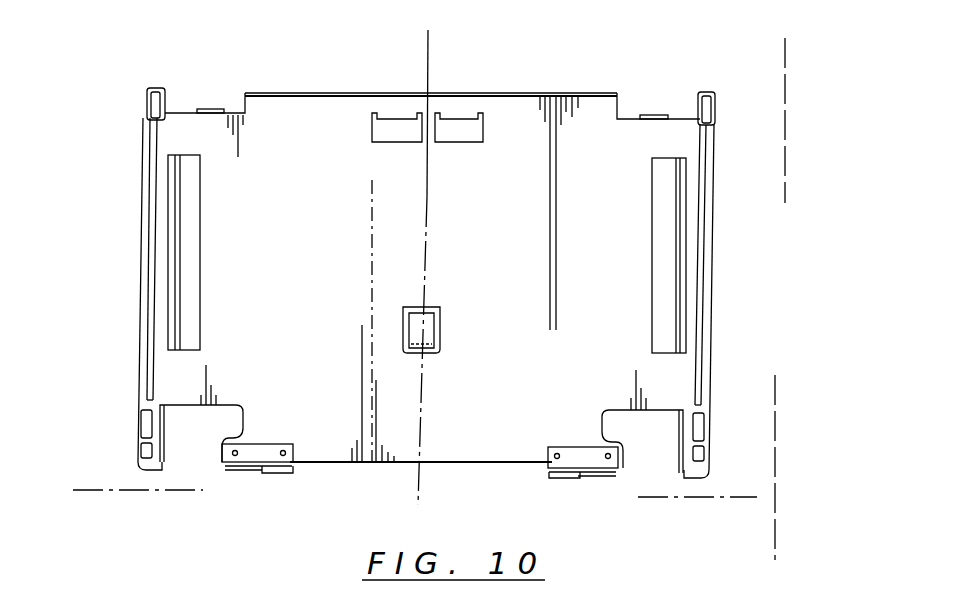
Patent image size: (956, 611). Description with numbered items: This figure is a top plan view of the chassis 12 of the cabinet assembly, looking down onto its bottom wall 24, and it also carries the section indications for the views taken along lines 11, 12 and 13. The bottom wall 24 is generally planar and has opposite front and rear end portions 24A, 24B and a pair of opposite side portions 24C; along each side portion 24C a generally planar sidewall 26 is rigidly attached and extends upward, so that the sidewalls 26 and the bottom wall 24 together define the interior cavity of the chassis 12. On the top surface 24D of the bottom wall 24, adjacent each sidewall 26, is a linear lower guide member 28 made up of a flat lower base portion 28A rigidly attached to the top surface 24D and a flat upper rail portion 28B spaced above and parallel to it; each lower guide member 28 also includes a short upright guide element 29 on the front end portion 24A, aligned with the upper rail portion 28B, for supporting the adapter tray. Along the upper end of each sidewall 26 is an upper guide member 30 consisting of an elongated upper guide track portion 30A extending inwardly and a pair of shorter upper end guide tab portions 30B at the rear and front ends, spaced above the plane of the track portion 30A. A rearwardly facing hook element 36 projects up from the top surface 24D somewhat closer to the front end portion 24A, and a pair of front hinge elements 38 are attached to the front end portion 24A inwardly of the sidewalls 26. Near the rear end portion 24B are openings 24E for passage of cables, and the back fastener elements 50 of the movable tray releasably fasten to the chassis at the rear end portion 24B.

The section line 11- 11 is at (89, 465).
The chassis 12 is at (740, 53).
The section line 13- 13 is at (380, 48).
The bottom wall 24 is at (424, 275).
The front end portion 24A is at (330, 467).
The rear end portion 24B is at (486, 104).
The side portion 24C is at (172, 136).
The top surface 24D is at (513, 245).
The opening 24E is at (200, 93).
The sidewall 26 is at (420, 294).
The lower guide member 28 is at (427, 258).
The lower base portion 28A is at (187, 180).
The upper rail portion 28B is at (172, 320).
The upright guide element 29 is at (163, 424).
The upper guide member 30 is at (420, 282).
The upper guide track portion 30A is at (148, 217).
The upper end guide tab portion 30B is at (152, 101).
The hook element 36 is at (440, 316).
The front hinge element 38 is at (270, 473).
The back fastener element 50 is at (223, 112).